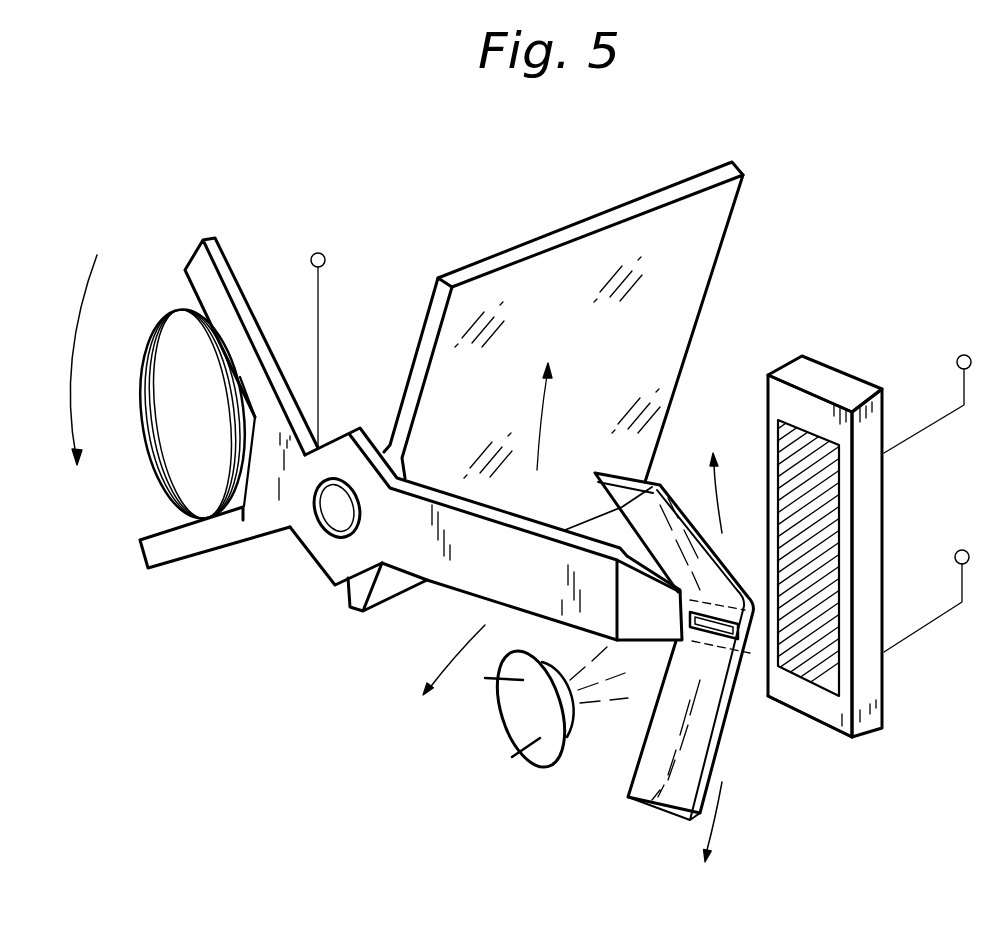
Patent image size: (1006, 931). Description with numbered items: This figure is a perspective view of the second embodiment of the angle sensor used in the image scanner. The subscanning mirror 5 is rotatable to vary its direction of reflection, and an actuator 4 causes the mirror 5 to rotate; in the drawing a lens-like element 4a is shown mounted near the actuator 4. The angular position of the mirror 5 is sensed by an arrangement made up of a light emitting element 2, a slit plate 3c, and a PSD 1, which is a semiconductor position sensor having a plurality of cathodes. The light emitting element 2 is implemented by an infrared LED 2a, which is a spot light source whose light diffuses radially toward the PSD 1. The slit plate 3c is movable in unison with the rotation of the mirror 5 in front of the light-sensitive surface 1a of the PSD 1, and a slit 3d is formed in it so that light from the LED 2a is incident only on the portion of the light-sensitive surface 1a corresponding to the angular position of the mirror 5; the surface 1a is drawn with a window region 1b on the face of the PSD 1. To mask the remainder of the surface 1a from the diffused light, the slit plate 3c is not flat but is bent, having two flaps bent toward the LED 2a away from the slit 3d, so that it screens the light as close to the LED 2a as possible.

The PSD 1 is at (884, 495).
The light-sensitive surface 1a is at (840, 718).
The light receiving window 1b is at (789, 424).
The light emitting element 2 is at (486, 713).
The LED 2a is at (540, 753).
The slit plate 3c is at (658, 812).
The slit 3d is at (722, 633).
The actuator 4 is at (118, 462).
The lens holder 4a is at (167, 485).
The subscanning mirror 5 is at (597, 215).